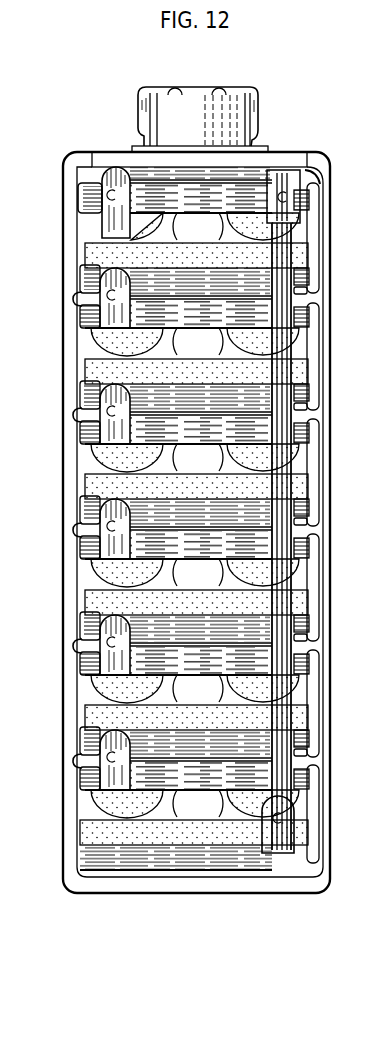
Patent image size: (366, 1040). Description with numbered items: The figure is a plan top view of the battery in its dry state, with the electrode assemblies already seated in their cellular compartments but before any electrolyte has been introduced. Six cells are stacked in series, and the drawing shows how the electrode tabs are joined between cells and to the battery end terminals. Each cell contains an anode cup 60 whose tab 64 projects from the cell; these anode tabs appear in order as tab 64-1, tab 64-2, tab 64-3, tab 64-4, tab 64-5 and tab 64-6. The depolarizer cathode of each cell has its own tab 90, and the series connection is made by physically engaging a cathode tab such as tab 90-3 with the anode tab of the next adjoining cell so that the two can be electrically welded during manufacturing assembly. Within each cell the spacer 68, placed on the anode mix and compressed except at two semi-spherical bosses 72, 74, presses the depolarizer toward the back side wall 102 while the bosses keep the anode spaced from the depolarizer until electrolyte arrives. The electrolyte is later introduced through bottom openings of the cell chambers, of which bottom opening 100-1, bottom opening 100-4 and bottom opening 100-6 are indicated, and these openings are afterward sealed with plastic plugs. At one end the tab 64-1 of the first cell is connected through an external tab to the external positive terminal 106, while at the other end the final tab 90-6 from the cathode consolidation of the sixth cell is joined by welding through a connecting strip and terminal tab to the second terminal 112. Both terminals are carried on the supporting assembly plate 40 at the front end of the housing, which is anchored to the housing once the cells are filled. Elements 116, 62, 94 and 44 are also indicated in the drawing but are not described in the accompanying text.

The supporting assembly plate 40 is at (115, 150).
The external positive terminal 106 is at (165, 117).
The second terminal 112 is at (258, 100).
The bottom opening 100-1 is at (217, 223).
The housing corner tab 116 is at (326, 181).
The tab of the anode cup 64-1 is at (105, 228).
The tab of the anode cup 64-2 is at (110, 316).
The tab of the anode cup 64-3 is at (110, 430).
The tab of the anode cup 64-4 is at (110, 548).
The tab of the anode cup 64-5 is at (108, 663).
The tab of the anode cup 64-6 is at (108, 780).
The boss 72 is at (143, 228).
The boss 74 is at (255, 227).
The tab of the depolarizer cathode cup 90 is at (314, 232).
The anode cup 60 is at (319, 519).
The back side wall 102 is at (330, 238).
The tab of the anode cup 64 is at (294, 339).
The tab of the depolarizer cathode cup 90-3 is at (296, 427).
The right bracket 62 is at (336, 472).
The bottom opening 100-4 is at (283, 577).
The bottom opening 100-6 is at (213, 802).
The sixth cell right connector 94 is at (330, 759).
The spacer 68 is at (336, 814).
The bottom plate 44 is at (223, 857).
The final tab of the depolarizer cathode 90-6 is at (260, 843).